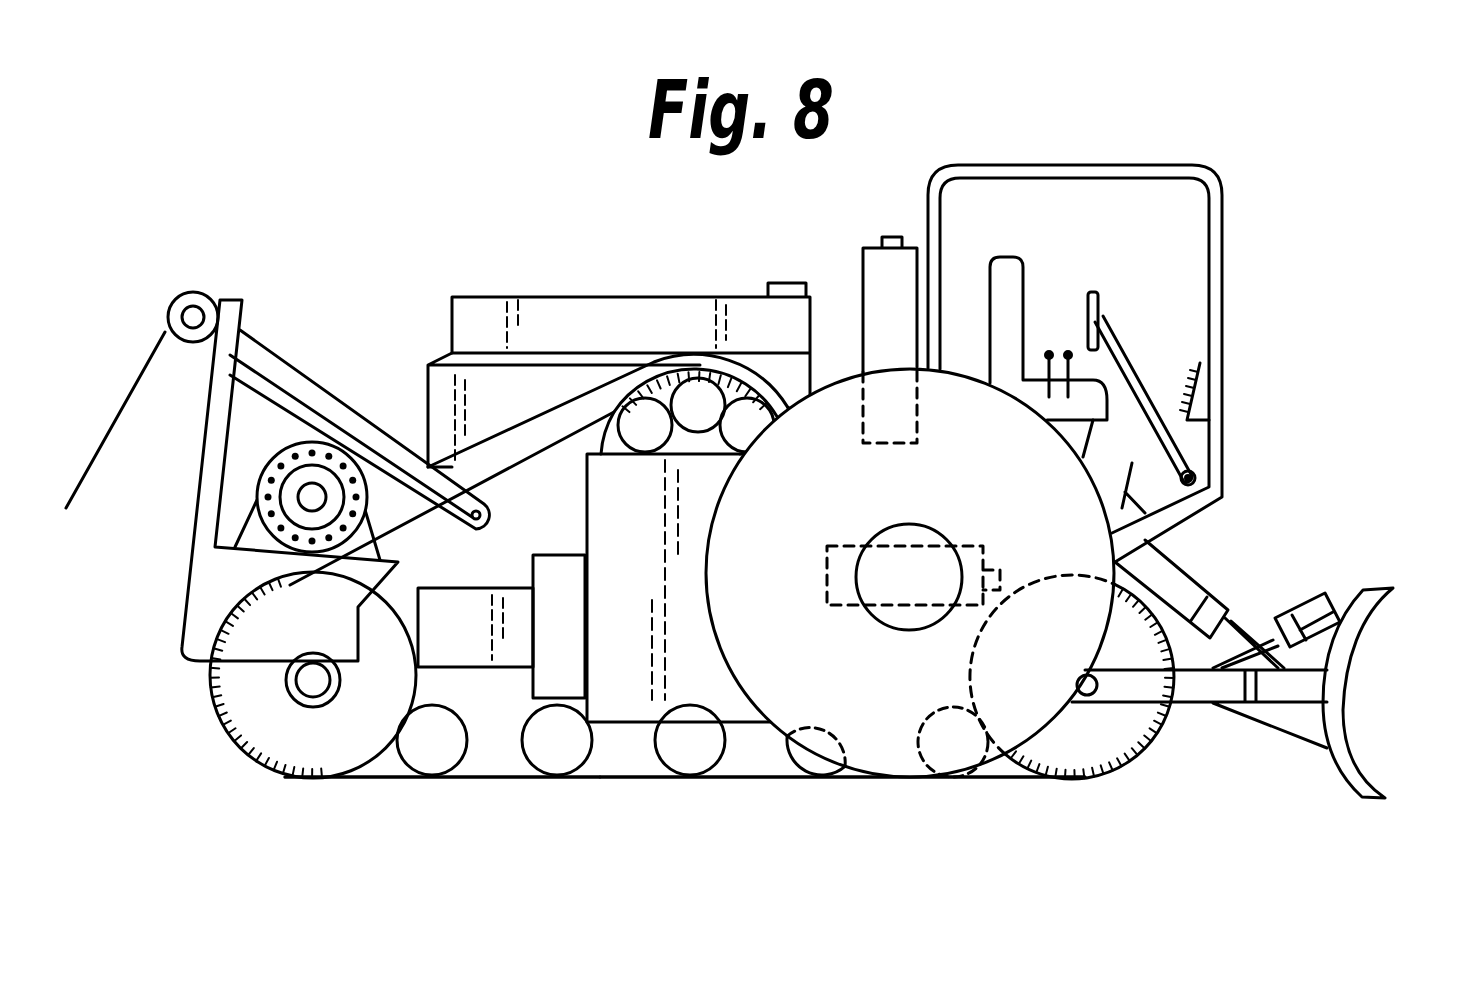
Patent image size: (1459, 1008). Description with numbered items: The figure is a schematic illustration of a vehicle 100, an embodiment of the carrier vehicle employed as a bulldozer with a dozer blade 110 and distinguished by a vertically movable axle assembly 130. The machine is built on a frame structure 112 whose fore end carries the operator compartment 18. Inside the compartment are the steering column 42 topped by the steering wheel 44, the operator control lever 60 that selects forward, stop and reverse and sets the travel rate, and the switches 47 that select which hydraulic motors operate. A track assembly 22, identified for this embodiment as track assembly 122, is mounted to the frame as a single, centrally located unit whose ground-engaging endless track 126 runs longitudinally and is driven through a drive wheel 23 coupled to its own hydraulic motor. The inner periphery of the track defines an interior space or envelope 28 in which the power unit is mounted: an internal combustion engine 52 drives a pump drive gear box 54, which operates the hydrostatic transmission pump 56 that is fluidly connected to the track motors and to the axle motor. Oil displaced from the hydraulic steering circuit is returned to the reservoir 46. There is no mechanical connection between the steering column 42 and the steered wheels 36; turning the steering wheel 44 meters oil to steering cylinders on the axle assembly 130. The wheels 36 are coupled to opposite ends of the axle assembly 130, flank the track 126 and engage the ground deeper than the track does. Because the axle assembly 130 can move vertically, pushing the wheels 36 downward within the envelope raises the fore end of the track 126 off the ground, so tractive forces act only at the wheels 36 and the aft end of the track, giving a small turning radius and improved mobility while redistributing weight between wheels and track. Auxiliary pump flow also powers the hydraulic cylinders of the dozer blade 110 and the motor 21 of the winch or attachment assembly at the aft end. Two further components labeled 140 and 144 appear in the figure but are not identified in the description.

The vehicle 100 is at (513, 252).
The hydraulic fluid tank 140 is at (653, 297).
The exhaust stack 144 is at (880, 244).
The steering wheel 44 is at (1090, 290).
The operator control lever 60 is at (1050, 350).
The steering column 42 is at (1107, 320).
The operator compartment 18 is at (1228, 290).
The switches 47 is at (1208, 382).
The track assembly 22 is at (277, 360).
The motor 21 is at (337, 448).
The reservoir 46 is at (496, 411).
The pump drive gear box 54 is at (546, 555).
The hydrostatic transmission pump 56 is at (432, 640).
The internal combustion engine 52 is at (609, 615).
The frame structure 112 is at (204, 630).
The drive wheel 23 is at (292, 776).
The track 126 is at (375, 778).
The track assembly 122 is at (511, 778).
The envelope 28 is at (630, 763).
The steerable wheels 36 is at (770, 725).
The axle assembly 130 is at (898, 582).
The dozer blade 110 is at (1341, 655).